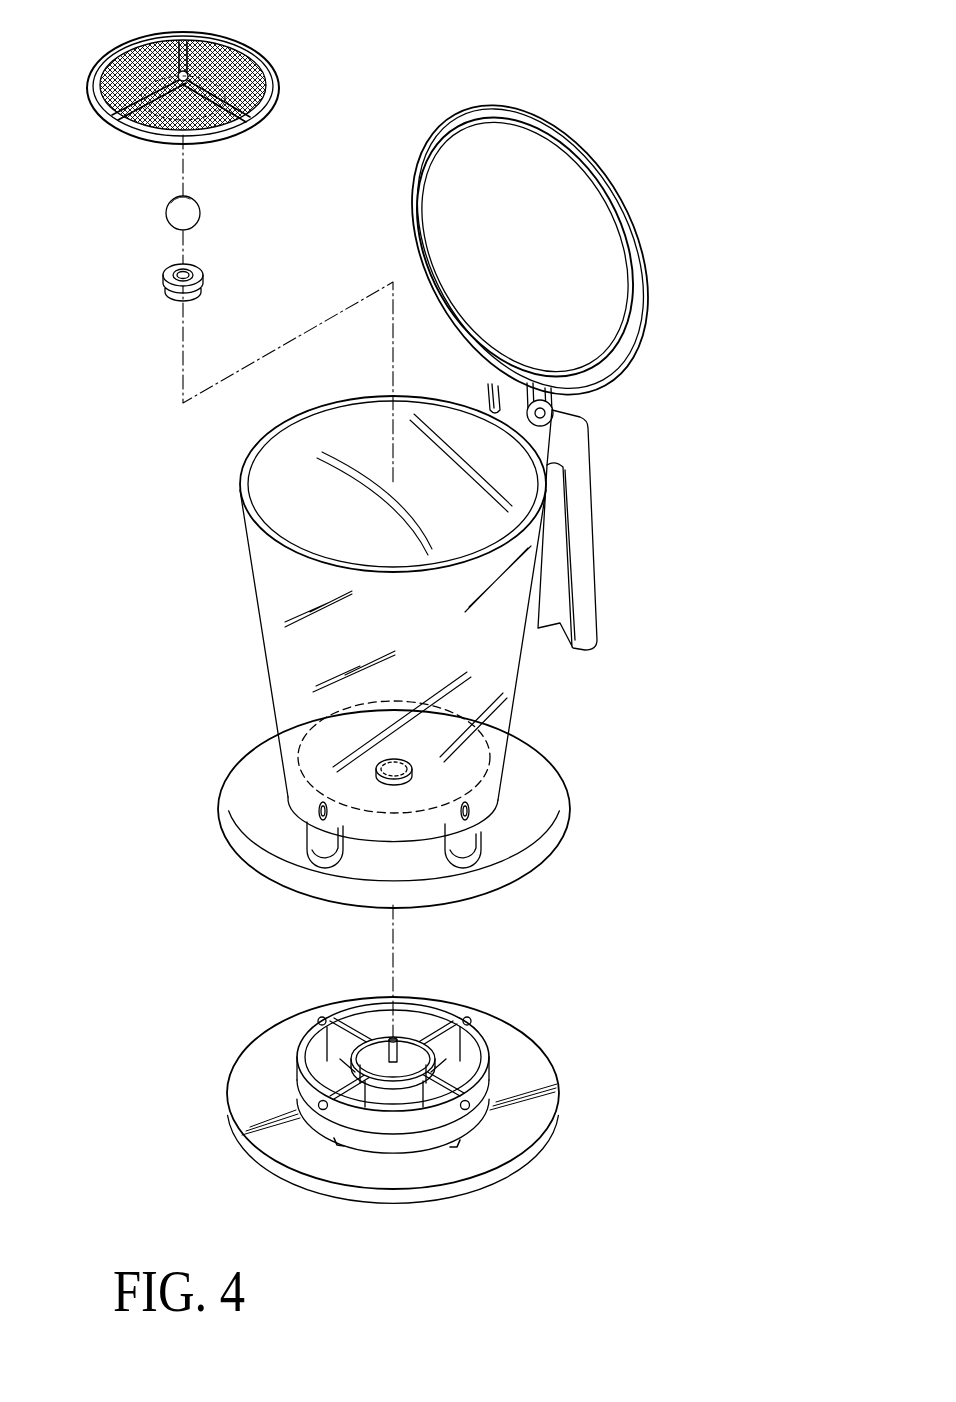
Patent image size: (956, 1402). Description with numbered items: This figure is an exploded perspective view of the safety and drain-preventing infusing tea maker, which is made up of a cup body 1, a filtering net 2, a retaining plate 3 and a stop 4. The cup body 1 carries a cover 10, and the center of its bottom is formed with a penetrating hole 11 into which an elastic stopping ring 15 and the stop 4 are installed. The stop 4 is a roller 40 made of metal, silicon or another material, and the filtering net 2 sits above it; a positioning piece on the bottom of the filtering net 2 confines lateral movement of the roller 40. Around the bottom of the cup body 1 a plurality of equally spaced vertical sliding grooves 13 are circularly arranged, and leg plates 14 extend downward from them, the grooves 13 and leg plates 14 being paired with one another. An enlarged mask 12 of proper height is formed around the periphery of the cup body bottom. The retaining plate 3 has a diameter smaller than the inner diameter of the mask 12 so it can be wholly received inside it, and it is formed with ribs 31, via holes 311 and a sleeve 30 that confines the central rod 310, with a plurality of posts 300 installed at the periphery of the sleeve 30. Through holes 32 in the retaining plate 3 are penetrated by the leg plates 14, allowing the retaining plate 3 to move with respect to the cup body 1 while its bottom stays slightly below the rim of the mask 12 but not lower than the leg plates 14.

The cup body 1 is at (435, 671).
The filtering net 2 is at (300, 85).
The retaining plate 3 is at (439, 1108).
The stop 4 is at (201, 260).
The cover 10 is at (636, 318).
The penetrating hole 11 is at (376, 767).
The mask 12 is at (442, 890).
The vertical sliding grooves 13 is at (318, 810).
The leg plates 14 is at (325, 843).
The elastic stopping ring 15 is at (166, 292).
The sleeve 30 is at (300, 1094).
The ribs 31 is at (338, 1050).
The through holes 32 is at (338, 1142).
The roller 40 is at (170, 215).
The posts 300 is at (317, 1021).
The central rod 310 is at (392, 1039).
The via holes 311 is at (462, 1066).